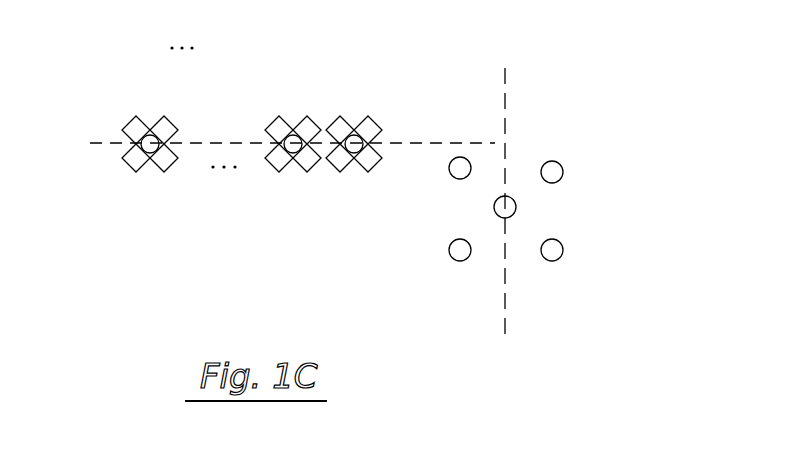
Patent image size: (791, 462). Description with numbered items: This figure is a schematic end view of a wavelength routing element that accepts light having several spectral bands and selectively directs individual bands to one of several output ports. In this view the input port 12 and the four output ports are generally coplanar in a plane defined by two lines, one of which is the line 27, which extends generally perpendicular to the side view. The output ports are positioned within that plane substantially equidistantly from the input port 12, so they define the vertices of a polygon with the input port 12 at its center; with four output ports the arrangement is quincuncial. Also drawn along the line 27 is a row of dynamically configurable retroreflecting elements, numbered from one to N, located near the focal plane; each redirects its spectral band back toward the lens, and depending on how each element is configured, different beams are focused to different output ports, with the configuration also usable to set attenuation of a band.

The line 27 is at (93, 143).
The input port 12 is at (516, 207).